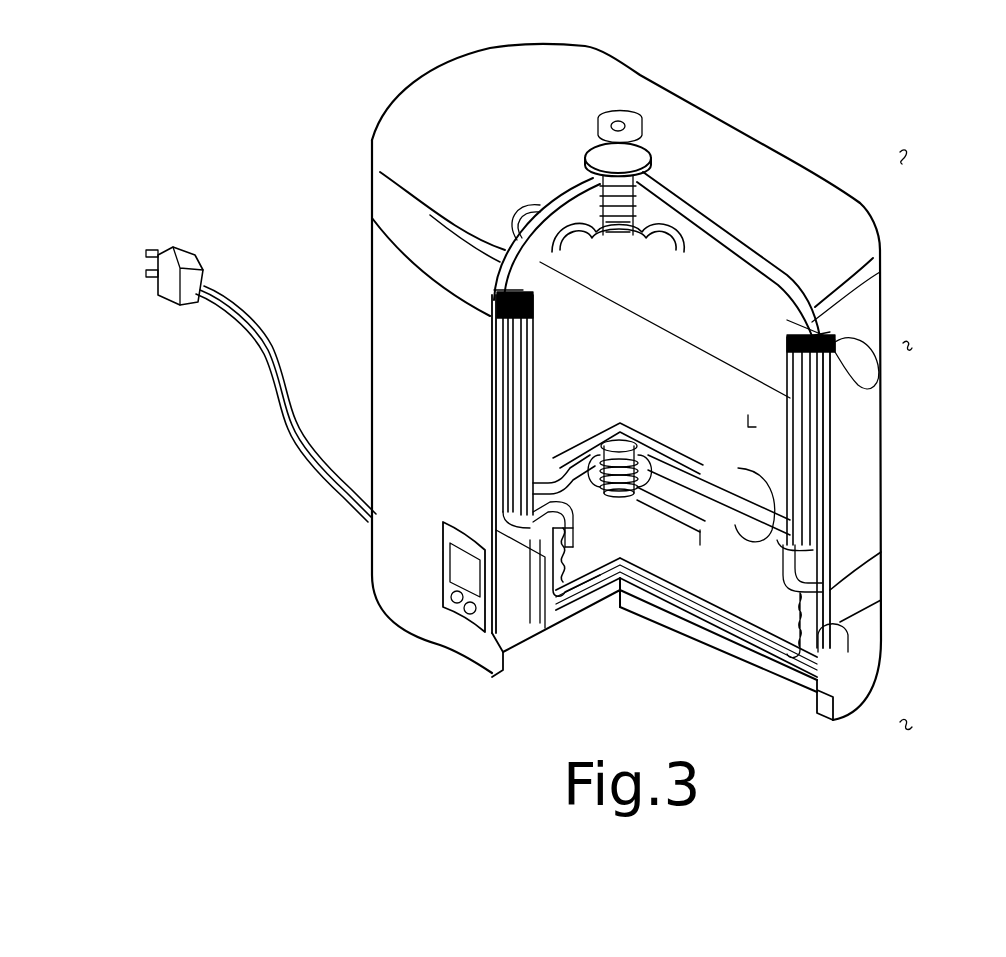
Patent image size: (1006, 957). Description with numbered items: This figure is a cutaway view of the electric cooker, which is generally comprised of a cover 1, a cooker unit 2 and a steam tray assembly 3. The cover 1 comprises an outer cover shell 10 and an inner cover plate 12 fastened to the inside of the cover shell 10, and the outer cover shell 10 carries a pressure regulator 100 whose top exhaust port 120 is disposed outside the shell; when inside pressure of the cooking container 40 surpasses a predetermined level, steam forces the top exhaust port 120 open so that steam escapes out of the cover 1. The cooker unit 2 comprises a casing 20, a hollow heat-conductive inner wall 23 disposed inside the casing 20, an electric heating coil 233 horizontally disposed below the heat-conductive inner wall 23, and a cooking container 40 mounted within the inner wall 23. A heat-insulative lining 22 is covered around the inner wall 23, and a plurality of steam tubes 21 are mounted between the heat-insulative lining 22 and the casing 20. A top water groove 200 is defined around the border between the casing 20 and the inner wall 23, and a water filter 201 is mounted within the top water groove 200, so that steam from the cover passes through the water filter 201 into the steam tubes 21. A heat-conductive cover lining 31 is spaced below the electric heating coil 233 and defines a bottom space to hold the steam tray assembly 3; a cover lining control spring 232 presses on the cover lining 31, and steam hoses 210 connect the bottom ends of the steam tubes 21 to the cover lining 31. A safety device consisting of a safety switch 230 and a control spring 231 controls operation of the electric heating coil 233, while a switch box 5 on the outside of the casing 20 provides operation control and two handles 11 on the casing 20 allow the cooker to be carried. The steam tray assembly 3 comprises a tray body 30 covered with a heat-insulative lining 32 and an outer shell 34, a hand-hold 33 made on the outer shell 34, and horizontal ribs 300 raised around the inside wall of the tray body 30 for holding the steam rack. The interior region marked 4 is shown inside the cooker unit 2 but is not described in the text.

The cover 1 is at (918, 143).
The cooker unit 2 is at (921, 336).
The steam tray assembly 3 is at (918, 721).
The inner chamber 4 is at (744, 403).
The switch box 5 is at (467, 607).
The outer cover shell 10 is at (850, 212).
The handles 11 is at (863, 370).
The inner cover plate 12 is at (742, 303).
The casing 20 is at (847, 522).
The steam tubes 21 is at (818, 495).
The heat-insulative lining 22 is at (512, 362).
The hollow heat-conductive inner wall 23 is at (800, 465).
The tray body 30 is at (580, 587).
The heat-conductive cover lining 31 is at (740, 480).
The heat-insulative lining 32 is at (557, 603).
The hand-hold 33 is at (860, 642).
The outer shell 34 is at (873, 608).
The cooking container 40 is at (787, 410).
The pressure regulator 100 is at (622, 122).
The top exhaust port 120 is at (645, 122).
The top water groove 200 is at (855, 300).
The water filter 201 is at (835, 335).
The steam hoses 210 is at (810, 560).
The safety switch 230 is at (620, 440).
The control spring 231 is at (667, 457).
The cover lining control spring 232 is at (603, 447).
The electric heating coil 233 is at (680, 540).
The horizontal ribs 300 is at (785, 632).